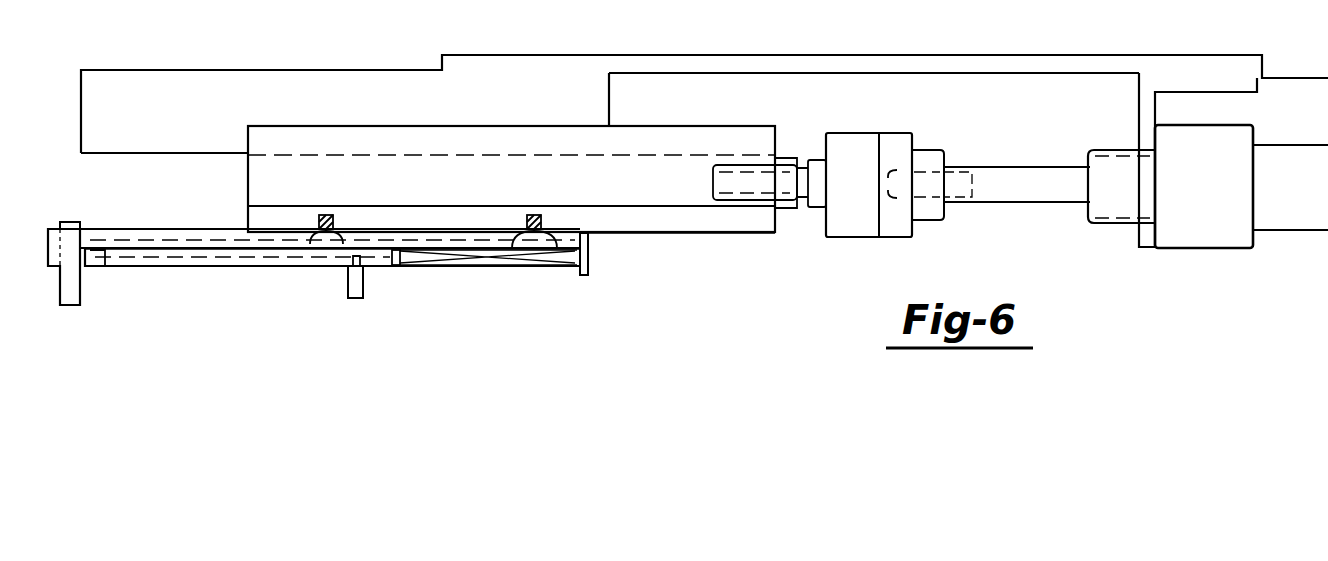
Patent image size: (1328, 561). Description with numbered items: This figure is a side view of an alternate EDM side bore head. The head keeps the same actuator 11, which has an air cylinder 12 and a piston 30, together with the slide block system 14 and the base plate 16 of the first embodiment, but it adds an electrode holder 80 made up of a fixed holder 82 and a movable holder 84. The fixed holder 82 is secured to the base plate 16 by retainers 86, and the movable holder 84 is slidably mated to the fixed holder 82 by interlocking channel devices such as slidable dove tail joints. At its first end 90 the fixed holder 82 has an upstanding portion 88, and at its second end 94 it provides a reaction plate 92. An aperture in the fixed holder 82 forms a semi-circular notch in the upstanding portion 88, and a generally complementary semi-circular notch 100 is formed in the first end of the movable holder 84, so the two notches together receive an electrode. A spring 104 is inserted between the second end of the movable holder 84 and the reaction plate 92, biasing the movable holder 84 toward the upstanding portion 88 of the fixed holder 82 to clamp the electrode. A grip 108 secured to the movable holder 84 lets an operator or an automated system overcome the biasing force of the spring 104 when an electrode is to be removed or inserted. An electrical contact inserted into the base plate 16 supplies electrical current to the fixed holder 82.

The slide block system 14 is at (352, 95).
The base plate 16 is at (752, 222).
The piston 30 is at (992, 187).
The actuator 11 is at (1105, 200).
The air cylinder 12 is at (1293, 213).
The fixed holder 82 is at (194, 236).
The electrode holder 80 is at (190, 266).
The movable holder 84 is at (245, 266).
The upstanding portion 88 is at (48, 270).
The first end 90 is at (50, 243).
The semi-circular notch 100 is at (105, 266).
The retainers 86 is at (505, 262).
The grip 108 is at (355, 275).
The spring 104 is at (442, 266).
The reaction plate 92 is at (592, 253).
The second end 94 is at (587, 234).